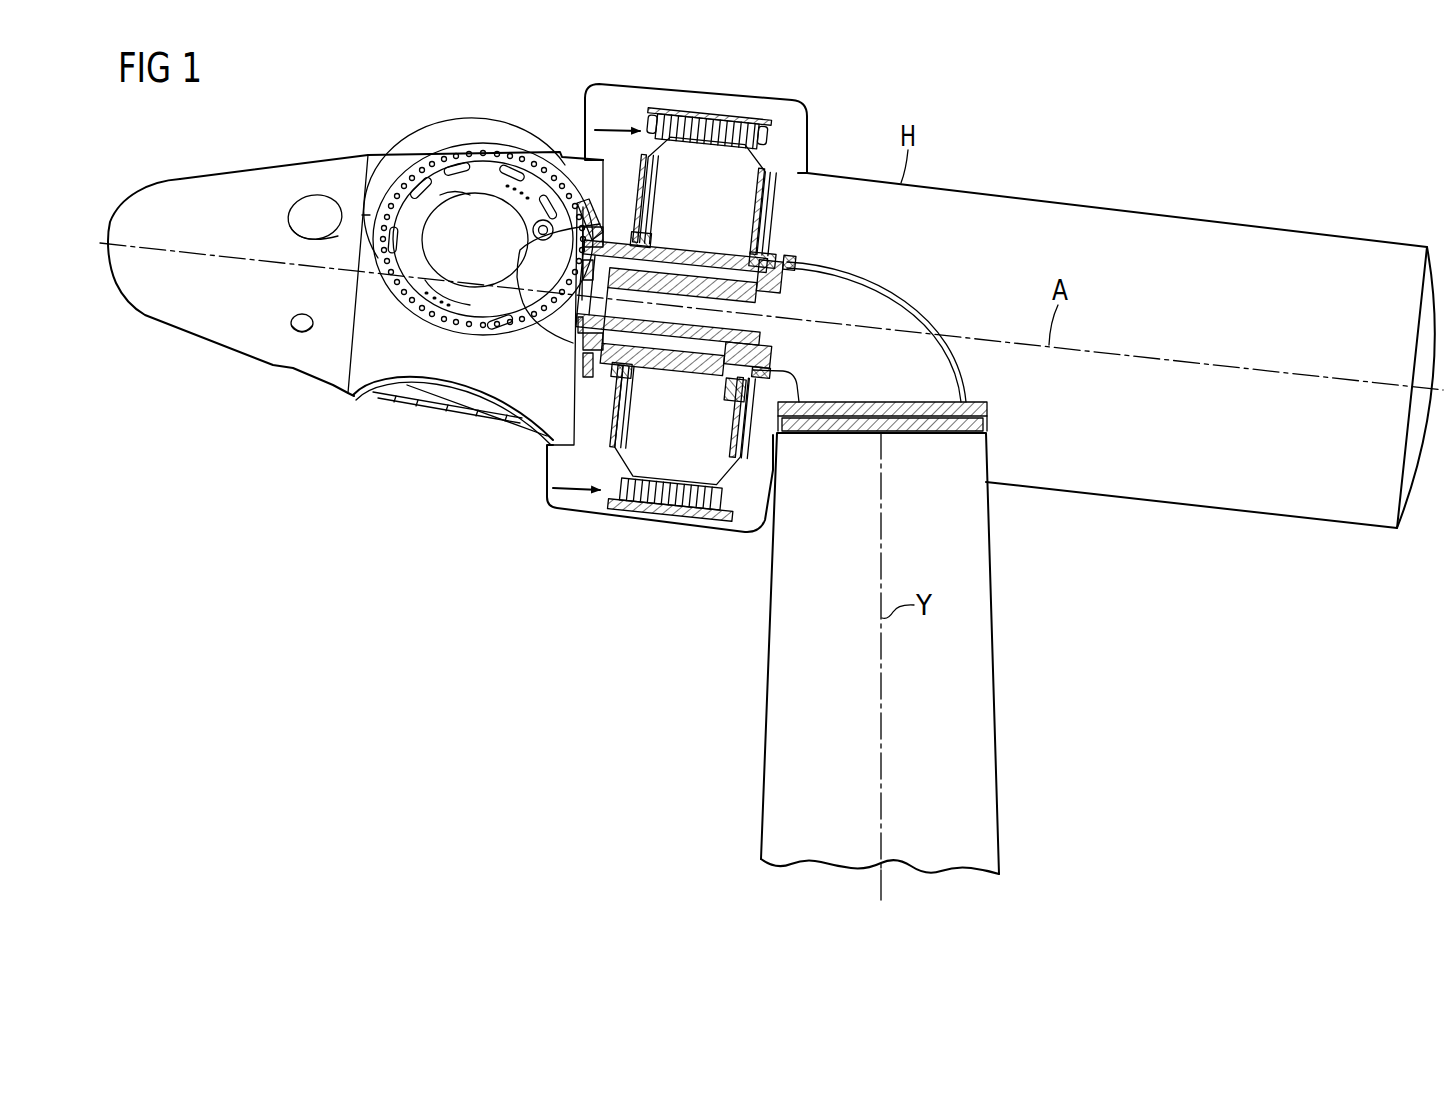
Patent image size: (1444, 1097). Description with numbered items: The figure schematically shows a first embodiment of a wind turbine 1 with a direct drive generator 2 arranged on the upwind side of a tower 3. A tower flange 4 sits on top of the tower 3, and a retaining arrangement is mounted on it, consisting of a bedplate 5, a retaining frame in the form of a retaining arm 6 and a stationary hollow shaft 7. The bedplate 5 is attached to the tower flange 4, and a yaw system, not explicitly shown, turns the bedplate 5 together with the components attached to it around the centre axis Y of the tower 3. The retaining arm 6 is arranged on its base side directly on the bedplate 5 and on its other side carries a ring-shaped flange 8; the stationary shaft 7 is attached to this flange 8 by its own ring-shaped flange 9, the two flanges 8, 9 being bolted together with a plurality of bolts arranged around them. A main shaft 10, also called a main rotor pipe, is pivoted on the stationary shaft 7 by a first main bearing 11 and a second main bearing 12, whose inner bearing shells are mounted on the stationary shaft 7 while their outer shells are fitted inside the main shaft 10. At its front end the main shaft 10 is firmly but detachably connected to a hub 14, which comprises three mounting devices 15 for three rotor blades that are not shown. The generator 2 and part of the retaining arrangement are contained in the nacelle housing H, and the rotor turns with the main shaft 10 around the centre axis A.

The wind turbine 1 is at (1042, 103).
The direct drive generator 2 is at (722, 80).
The tower 3 is at (995, 577).
The tower flange 4 is at (903, 432).
The bedplate 5 is at (863, 413).
The retaining arm 6 is at (867, 283).
The stationary shaft 7 is at (754, 312).
The flange 8 is at (774, 316).
The flange 9 is at (750, 327).
The main shaft 10 is at (672, 292).
The first main bearing 11 is at (631, 305).
The second main bearing 12 is at (678, 323).
The hub 14 is at (383, 160).
The mounting devices 15 is at (485, 176).